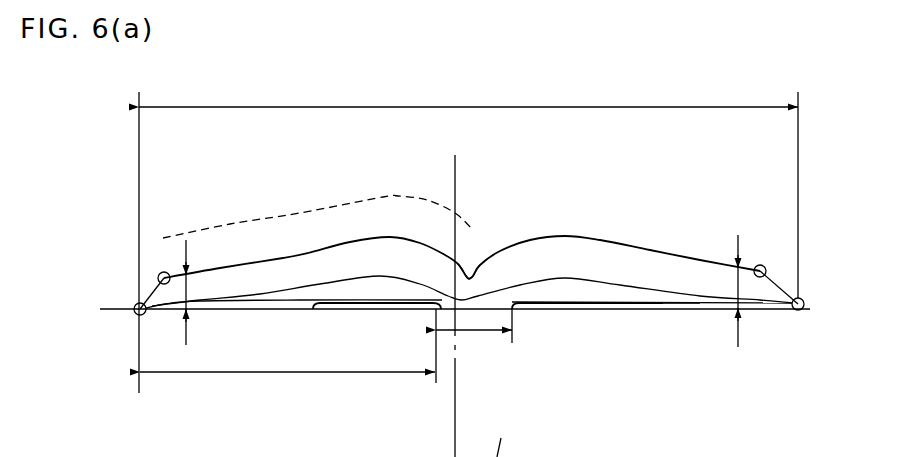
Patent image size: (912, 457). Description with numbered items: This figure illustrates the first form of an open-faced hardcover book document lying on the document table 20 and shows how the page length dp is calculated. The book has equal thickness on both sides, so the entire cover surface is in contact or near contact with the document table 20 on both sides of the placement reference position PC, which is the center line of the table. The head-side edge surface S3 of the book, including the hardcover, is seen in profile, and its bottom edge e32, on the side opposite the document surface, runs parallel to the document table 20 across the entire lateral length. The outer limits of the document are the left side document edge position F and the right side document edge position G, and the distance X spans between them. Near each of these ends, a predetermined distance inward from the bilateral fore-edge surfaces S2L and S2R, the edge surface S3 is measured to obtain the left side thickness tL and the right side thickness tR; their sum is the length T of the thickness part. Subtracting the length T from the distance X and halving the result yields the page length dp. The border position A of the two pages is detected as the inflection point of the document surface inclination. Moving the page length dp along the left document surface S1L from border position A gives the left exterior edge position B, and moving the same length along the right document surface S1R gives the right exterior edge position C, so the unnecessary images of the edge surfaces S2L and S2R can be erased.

The document table 20 is at (616, 310).
The bottom edge e32 is at (553, 310).
The left document surface S1L is at (306, 246).
The right document surface S1R is at (601, 234).
The left edge surface S2L is at (150, 292).
The right edge surface S2R is at (776, 280).
The edge surface S3 is at (385, 260).
The border position A is at (471, 272).
The left side exterior edge position B is at (160, 273).
The right side exterior edge position C is at (756, 265).
The left side document edge position F is at (136, 314).
The right side document edge position G is at (796, 311).
The placement reference position PC is at (452, 288).
The distance X is at (468, 187).
The length of the thickness part T is at (474, 338).
The page length dp is at (236, 226).
The left side thickness tL is at (190, 290).
The right side thickness tR is at (735, 278).